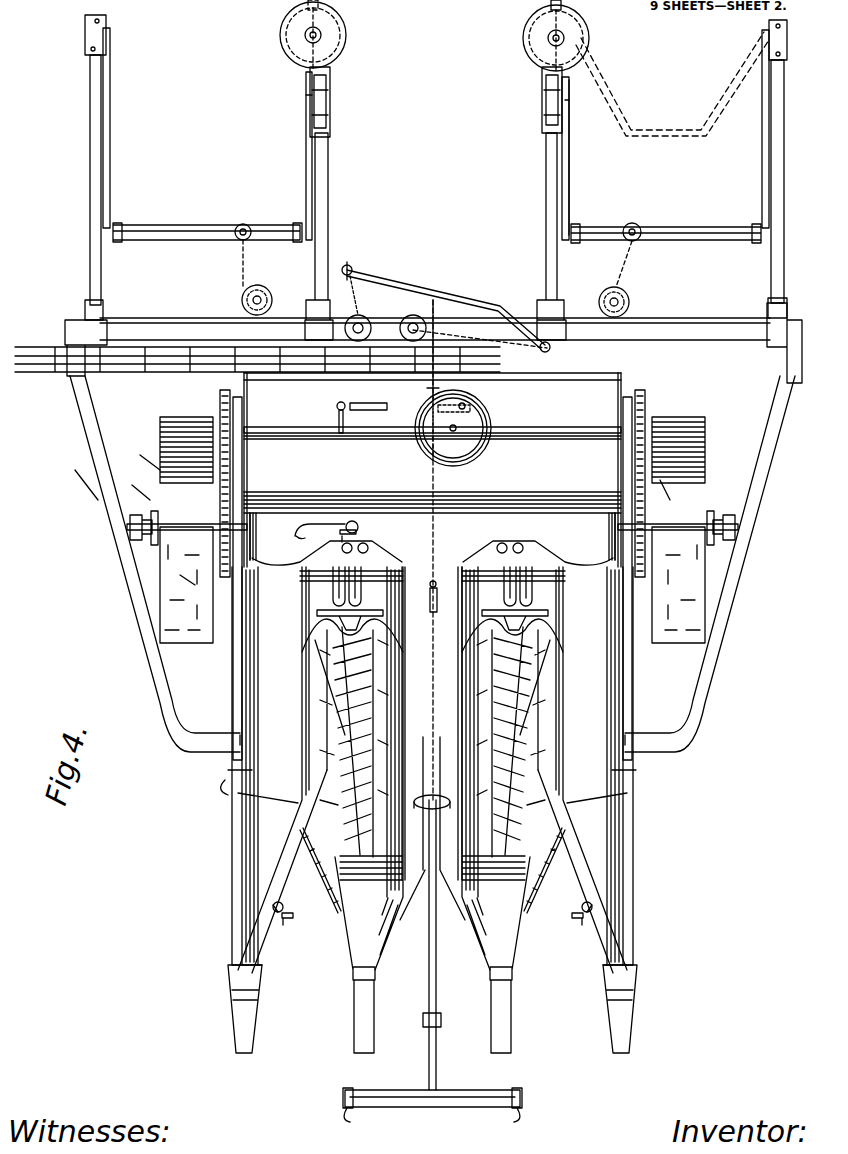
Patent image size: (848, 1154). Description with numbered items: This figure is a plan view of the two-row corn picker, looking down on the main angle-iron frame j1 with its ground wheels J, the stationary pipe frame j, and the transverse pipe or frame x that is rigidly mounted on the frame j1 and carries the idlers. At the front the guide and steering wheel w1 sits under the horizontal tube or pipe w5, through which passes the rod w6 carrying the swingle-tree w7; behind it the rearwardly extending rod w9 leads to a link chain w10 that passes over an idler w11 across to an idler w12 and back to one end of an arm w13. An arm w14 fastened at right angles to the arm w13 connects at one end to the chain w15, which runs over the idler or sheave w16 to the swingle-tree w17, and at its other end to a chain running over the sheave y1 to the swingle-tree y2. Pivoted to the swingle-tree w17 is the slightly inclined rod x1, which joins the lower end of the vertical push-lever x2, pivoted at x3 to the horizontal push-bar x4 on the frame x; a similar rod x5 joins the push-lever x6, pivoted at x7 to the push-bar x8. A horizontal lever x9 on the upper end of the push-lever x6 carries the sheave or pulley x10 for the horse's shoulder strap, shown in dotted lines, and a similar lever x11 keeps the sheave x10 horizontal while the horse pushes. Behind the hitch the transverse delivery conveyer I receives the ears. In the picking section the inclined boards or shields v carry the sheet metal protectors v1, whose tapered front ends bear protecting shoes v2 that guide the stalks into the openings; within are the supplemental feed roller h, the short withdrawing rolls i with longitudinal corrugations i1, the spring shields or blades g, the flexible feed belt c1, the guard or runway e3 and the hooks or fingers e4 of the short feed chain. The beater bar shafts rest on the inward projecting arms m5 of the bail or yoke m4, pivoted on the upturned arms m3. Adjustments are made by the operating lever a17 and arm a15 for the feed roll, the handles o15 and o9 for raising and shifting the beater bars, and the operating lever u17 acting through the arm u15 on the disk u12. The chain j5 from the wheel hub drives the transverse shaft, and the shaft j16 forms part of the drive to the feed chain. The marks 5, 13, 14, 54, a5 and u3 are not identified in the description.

The delivery conveyer I is at (178, 350).
The pipe or frame x is at (748, 320).
The slightly inclined rod x1 is at (111, 105).
The vertical push-lever x2 is at (86, 30).
The pivot point x3 is at (760, 35).
The horizontal arm or push-bar x4 is at (93, 195).
The rod x5 is at (306, 160).
The vertical push-lever x6 is at (572, 105).
The pivot point x7 is at (548, 80).
The horizontal arm or push-bar x8 is at (320, 205).
The horizontal lever x9 is at (330, 113).
The sheave or pulley x10 is at (325, 48).
The lever x11 is at (306, 110).
The sheave y1 is at (242, 302).
The swingle-tree y2 is at (215, 228).
The guide and steering wheel w1 is at (450, 810).
The horizontal tube or pipe w5 is at (440, 980).
The rod w6 is at (432, 1060).
The swingle-tree w7 is at (410, 1110).
The rearwardly extending rod w9 is at (425, 560).
The link chain w10 is at (428, 390).
The idler w11 is at (418, 312).
The idler w12 is at (355, 268).
The arm w13 is at (372, 310).
The arm w14 is at (523, 318).
The chain w15 is at (598, 296).
The idler or sheave w16 is at (630, 302).
The swingle-tree w17 is at (675, 228).
The cam wheel 5 is at (470, 438).
The pin 13 is at (472, 405).
The shaft 14 is at (506, 388).
The bar 54 is at (350, 405).
The operating lever a17 is at (335, 408).
The body casing a5 is at (600, 420).
The arm a15 is at (228, 420).
The operating handle o15 is at (292, 525).
The operating handle o9 is at (348, 520).
The chain j5 is at (205, 470).
The wheels J is at (722, 432).
The pipe frame j is at (780, 540).
The shaft j16 is at (131, 493).
The angle-iron frame j1 is at (127, 610).
The arm u15 is at (130, 528).
The disk u12 is at (429, 531).
The plate u3 is at (190, 640).
The operating lever u17 is at (437, 608).
The sheet metal protectors v1 is at (240, 905).
The protecting shoes v2 is at (245, 995).
The boards or shields v is at (302, 710).
The longitudinal corrugations i1 is at (400, 912).
The spring shields or blades g is at (355, 715).
The supplemental feed roller h is at (328, 680).
The withdrawing rolls i is at (362, 585).
The guard or runway e3 is at (286, 920).
The hooks or fingers e4 is at (283, 912).
The flexible feed belt c1 is at (423, 891).
The upturned arms m3 is at (262, 760).
The bail or yoke m4 is at (238, 735).
The inward projecting arms m5 is at (235, 790).